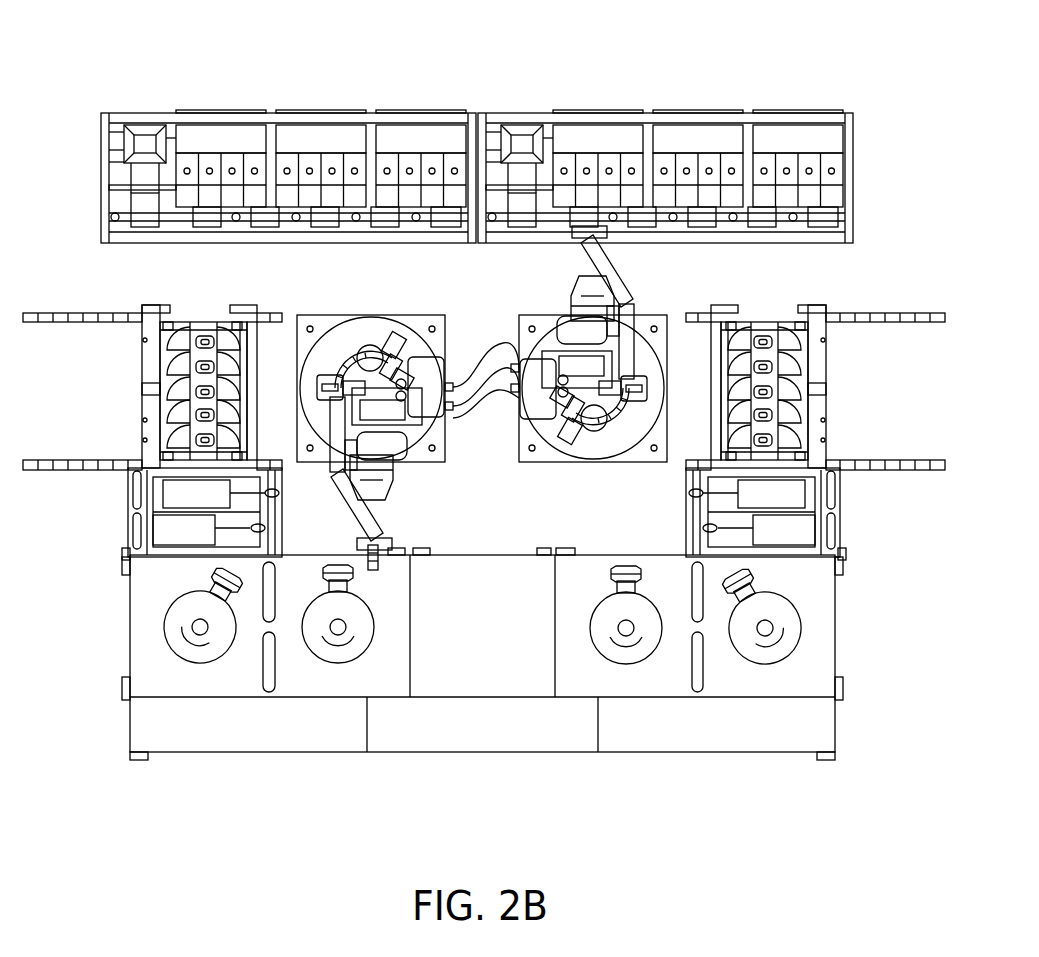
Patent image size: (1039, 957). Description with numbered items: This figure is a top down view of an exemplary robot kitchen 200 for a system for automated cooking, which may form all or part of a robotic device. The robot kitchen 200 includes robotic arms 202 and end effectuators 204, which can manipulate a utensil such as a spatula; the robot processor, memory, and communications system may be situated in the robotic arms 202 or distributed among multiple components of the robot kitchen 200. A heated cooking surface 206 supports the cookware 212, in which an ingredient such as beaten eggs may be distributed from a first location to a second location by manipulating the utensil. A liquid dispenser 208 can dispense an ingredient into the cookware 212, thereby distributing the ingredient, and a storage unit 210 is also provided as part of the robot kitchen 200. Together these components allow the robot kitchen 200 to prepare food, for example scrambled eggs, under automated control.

The robot kitchen 200 is at (105, 38).
The robotic arms 202 is at (385, 495).
The end effectuators 204 is at (400, 526).
The cooking surface 206 is at (868, 553).
The liquid dispenser 208 is at (695, 692).
The storage unit 210 is at (868, 110).
The cookware 212 is at (183, 608).